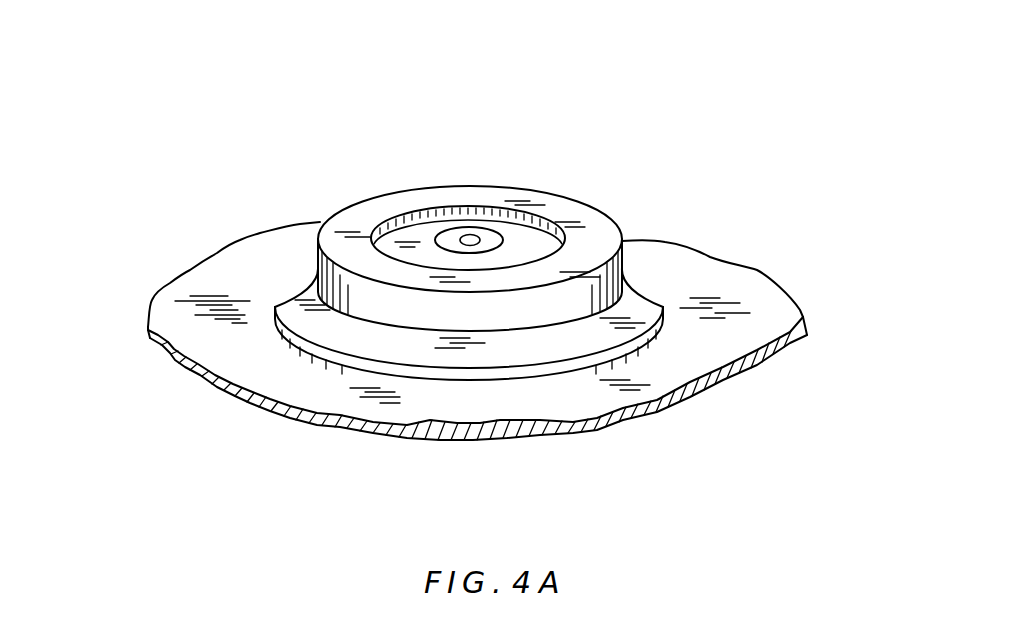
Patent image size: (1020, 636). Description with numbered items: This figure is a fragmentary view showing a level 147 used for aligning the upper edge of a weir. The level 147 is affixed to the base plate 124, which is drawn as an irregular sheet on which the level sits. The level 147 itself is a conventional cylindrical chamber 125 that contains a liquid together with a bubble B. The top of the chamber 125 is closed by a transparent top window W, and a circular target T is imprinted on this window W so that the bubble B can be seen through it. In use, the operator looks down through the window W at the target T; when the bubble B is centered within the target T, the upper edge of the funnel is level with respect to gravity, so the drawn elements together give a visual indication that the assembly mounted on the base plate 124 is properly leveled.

The level 147 is at (479, 239).
The base plate 124 is at (222, 262).
The cylindrical chamber 125 is at (612, 282).
The transparent top window W is at (403, 230).
The bubble B is at (468, 236).
The circular target T is at (488, 240).